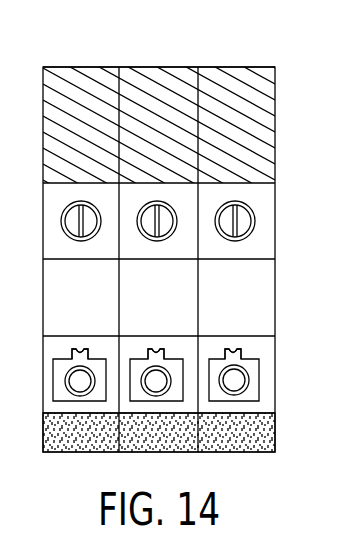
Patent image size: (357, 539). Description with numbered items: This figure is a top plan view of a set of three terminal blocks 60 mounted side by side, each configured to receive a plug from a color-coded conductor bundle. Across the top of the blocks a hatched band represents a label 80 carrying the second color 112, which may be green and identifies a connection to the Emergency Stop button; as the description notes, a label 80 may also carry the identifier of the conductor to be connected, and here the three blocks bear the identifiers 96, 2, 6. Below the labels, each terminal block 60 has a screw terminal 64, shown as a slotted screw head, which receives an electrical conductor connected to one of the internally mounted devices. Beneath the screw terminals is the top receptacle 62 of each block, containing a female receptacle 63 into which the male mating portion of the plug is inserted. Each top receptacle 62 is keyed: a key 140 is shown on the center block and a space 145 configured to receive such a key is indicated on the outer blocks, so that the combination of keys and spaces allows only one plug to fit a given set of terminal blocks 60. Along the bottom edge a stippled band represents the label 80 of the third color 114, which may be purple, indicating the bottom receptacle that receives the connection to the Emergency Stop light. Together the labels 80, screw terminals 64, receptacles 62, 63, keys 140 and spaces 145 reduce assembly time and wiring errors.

The terminal block 60 is at (91, 63).
The second color 112 is at (257, 62).
The label 80 is at (50, 82).
The first cell 96 is at (81, 125).
The second cell 2 is at (158, 125).
The third cell 6 is at (236, 125).
The screw terminal 64 is at (281, 215).
The top receptacle 62 is at (281, 346).
The female receptacle 63 is at (69, 368).
The space 145 is at (74, 353).
The key 140 is at (152, 352).
The third color 114 is at (271, 442).